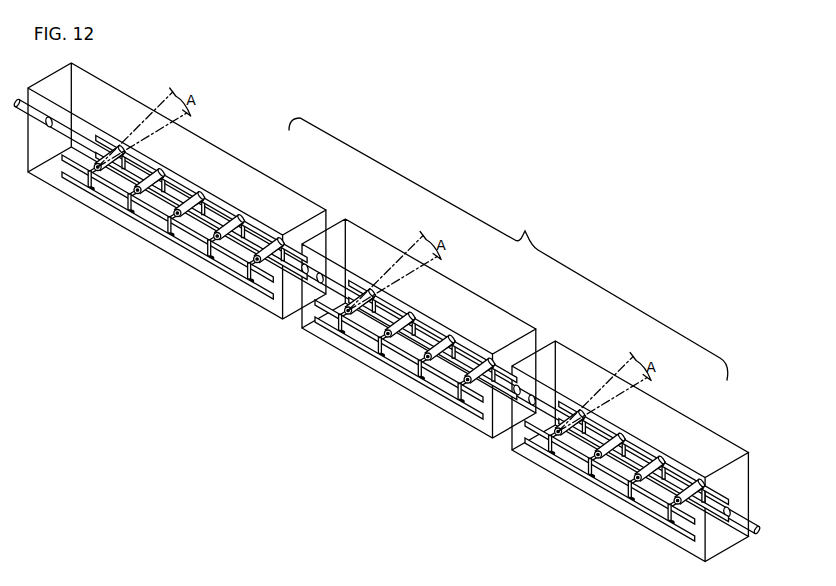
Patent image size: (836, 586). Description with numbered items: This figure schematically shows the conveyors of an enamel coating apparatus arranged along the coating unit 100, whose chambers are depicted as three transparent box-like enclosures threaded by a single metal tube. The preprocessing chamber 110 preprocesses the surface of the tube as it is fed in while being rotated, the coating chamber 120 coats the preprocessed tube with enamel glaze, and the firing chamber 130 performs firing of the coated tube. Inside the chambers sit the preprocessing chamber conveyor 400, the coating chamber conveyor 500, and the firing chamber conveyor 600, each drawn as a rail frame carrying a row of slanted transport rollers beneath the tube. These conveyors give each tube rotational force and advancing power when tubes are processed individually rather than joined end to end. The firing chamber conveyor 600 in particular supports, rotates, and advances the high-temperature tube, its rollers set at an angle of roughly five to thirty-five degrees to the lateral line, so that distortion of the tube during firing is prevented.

The coating unit 100 is at (508, 249).
The preprocessing chamber 110 is at (710, 430).
The coating chamber 120 is at (500, 308).
The firing chamber 130 is at (288, 184).
The preprocessing chamber conveyor 400 is at (615, 491).
The coating chamber conveyor 500 is at (403, 369).
The firing chamber conveyor 600 is at (192, 248).